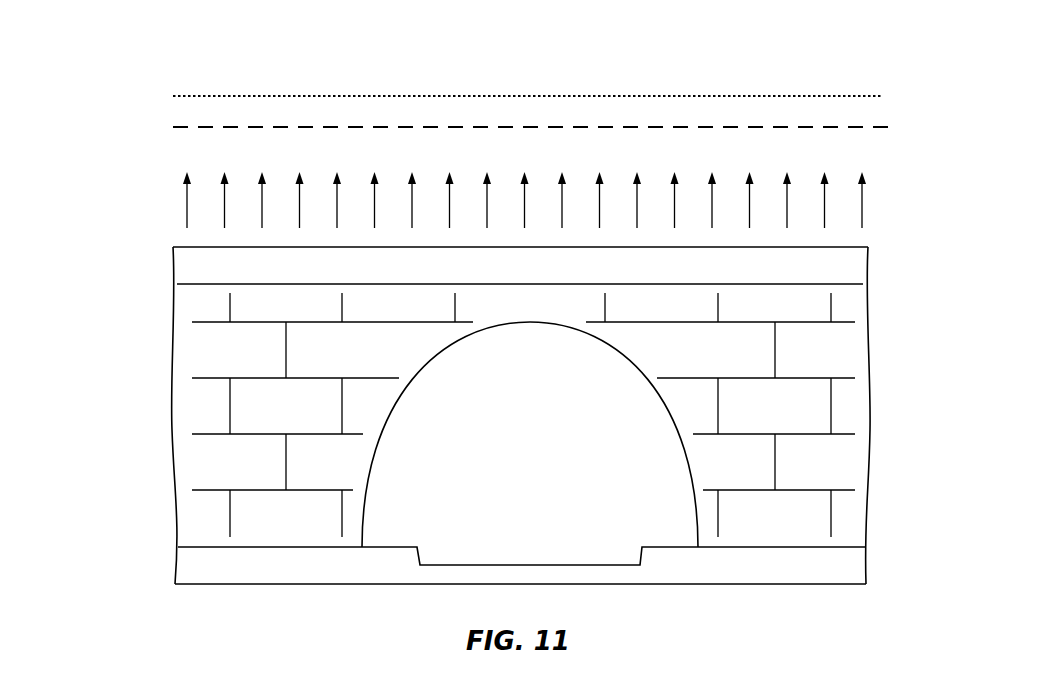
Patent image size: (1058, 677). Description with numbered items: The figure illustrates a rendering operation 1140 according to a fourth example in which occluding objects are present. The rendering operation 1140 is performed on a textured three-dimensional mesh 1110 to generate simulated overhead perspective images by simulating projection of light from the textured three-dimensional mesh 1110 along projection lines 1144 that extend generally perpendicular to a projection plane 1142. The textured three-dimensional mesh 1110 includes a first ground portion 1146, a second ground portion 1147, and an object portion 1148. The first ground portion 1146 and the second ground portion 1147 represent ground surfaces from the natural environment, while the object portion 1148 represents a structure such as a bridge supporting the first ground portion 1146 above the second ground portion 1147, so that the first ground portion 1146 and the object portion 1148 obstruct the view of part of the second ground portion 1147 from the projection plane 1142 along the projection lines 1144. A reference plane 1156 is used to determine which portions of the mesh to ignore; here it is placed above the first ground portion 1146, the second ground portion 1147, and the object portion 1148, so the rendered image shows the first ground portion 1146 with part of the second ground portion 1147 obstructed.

The textured three-dimensional mesh 1110 is at (172, 348).
The rendering operation 1140 is at (117, 95).
The projection plane 1142 is at (300, 95).
The projection lines 1144 is at (168, 172).
The first ground portion 1146 is at (853, 265).
The second ground portion 1147 is at (849, 565).
The object portion 1148 is at (850, 333).
The reference plane 1156 is at (203, 126).